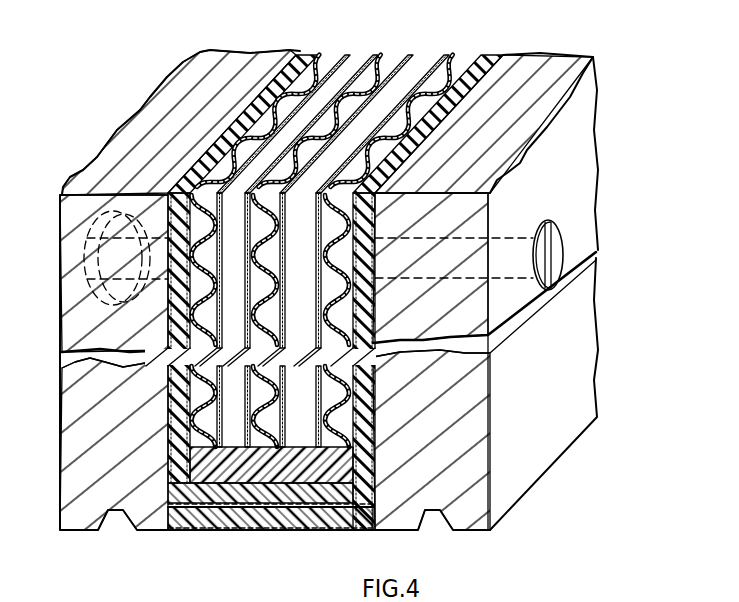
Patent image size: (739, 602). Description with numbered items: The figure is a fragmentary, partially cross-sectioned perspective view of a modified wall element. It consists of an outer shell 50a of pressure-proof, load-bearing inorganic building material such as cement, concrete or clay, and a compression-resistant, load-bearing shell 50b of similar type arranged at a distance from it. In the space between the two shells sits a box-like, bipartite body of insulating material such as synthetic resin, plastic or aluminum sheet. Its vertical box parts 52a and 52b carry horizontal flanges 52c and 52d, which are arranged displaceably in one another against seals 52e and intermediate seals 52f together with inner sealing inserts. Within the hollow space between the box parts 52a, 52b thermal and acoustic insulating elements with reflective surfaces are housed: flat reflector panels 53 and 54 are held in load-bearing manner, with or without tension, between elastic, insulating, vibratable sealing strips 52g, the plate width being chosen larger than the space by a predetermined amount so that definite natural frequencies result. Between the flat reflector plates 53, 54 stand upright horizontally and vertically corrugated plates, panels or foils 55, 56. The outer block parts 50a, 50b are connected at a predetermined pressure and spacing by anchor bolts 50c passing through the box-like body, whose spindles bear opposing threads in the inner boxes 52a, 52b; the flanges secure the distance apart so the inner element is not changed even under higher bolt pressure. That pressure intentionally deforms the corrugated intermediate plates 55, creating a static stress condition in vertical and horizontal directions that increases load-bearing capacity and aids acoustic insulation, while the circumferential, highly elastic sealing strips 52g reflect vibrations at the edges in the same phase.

The outer shell 50a is at (78, 495).
The compression-resistant shell 50b is at (585, 376).
The anchor bolts 50c is at (560, 248).
The vertical box part 52a is at (168, 457).
The vertical box part 52b is at (365, 312).
The horizontal flange 52c is at (272, 515).
The horizontal flange 52d is at (313, 517).
The seals 52e is at (362, 494).
The intermediate seals 52f is at (192, 533).
The sealing strips 52g is at (335, 450).
The reflector panel 53 is at (205, 170).
The reflector panel 54 is at (300, 100).
The corrugated intermediate plate 55 is at (200, 222).
The corrugated plate 56 is at (240, 140).